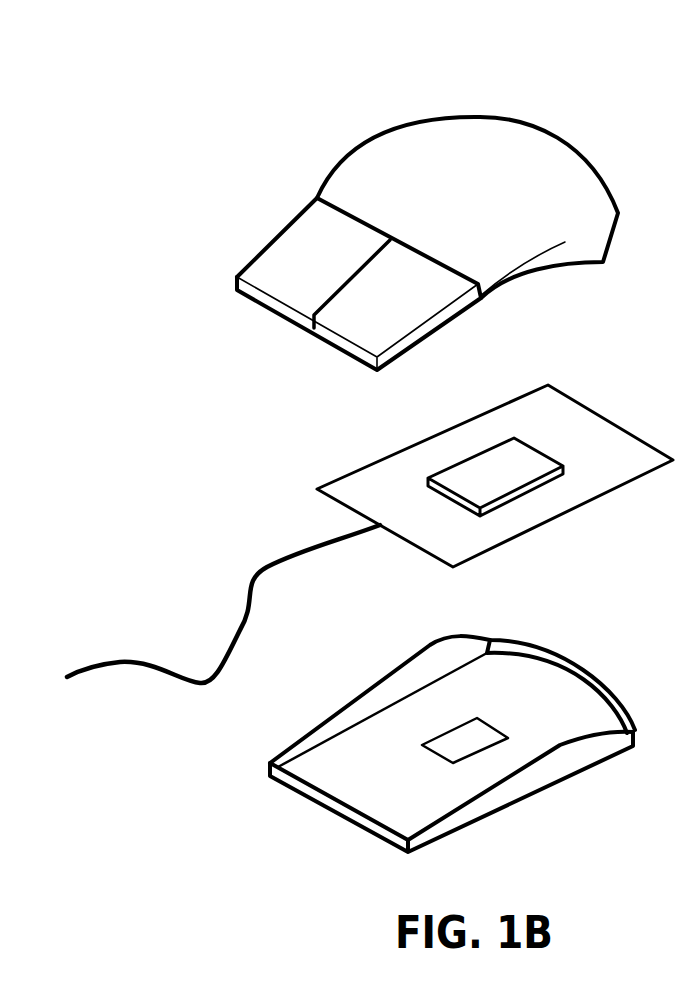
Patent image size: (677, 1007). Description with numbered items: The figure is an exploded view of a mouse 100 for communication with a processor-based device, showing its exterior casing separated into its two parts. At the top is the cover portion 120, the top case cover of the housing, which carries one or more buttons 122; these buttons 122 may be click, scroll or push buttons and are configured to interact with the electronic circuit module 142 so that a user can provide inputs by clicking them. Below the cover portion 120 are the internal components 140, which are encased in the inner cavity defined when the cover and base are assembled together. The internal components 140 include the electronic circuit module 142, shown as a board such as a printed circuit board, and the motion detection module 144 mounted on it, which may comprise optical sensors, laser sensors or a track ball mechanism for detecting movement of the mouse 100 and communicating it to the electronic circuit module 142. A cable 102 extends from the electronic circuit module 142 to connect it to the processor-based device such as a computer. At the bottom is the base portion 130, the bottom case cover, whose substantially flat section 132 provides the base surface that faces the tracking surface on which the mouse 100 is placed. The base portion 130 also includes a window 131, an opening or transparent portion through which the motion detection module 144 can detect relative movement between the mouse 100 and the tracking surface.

The mouse 100 is at (609, 91).
The cable 102 is at (130, 667).
The cover portion 120 is at (413, 178).
The buttons 122 is at (317, 238).
The base portion 130 is at (545, 765).
The window 131 is at (425, 756).
The substantially flat section 132 is at (537, 692).
The internal components 140 is at (320, 489).
The electronic circuit module 142 is at (590, 427).
The motion detection module 144 is at (487, 472).